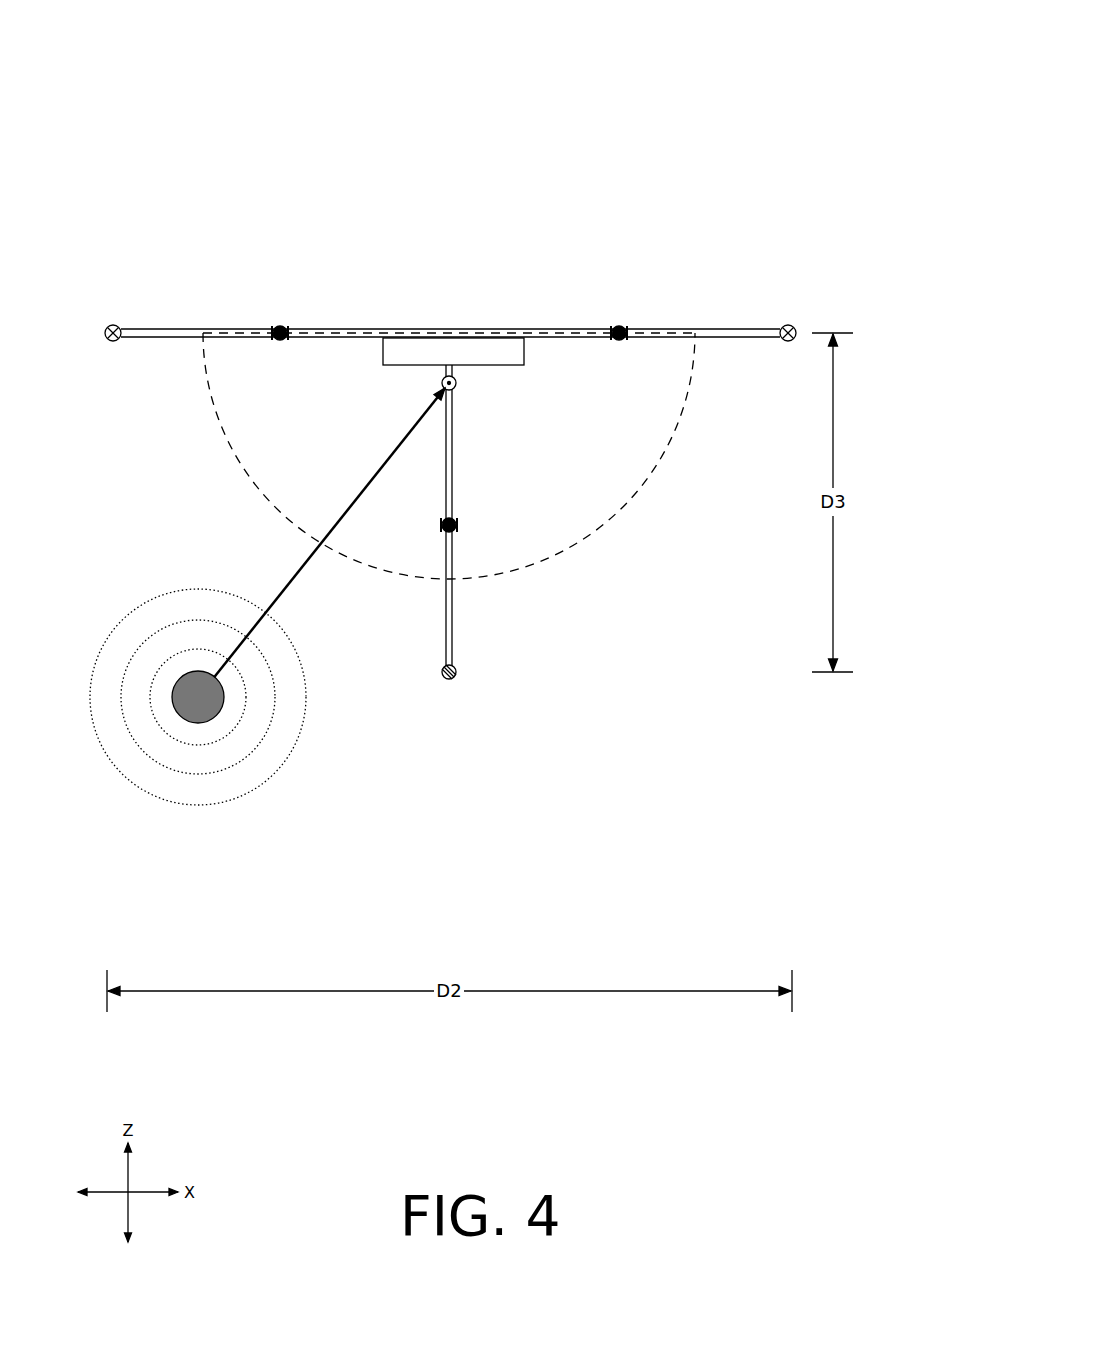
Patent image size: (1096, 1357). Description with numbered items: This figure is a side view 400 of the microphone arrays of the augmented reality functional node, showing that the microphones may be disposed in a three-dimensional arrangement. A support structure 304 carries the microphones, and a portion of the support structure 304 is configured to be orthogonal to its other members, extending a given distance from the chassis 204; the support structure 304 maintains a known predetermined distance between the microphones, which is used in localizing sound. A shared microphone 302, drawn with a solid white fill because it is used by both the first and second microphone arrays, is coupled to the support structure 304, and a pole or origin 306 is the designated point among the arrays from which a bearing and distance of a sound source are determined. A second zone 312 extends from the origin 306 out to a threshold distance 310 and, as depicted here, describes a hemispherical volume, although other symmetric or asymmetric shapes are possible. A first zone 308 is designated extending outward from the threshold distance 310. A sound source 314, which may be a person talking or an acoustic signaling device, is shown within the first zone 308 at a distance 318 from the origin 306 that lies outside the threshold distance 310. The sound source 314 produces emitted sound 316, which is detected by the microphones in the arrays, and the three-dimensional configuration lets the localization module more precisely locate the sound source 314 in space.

The side view 400 is at (768, 42).
The chassis 204 is at (497, 350).
The origin 306 is at (452, 382).
The shared microphone 302 is at (456, 389).
The support structure 304 is at (453, 622).
The threshold distance 310 is at (641, 490).
The second zone 312 is at (297, 399).
The first zone 308 is at (601, 603).
The distance 318 is at (324, 539).
The sound source 314 is at (205, 722).
The emitted sound 316 is at (203, 806).